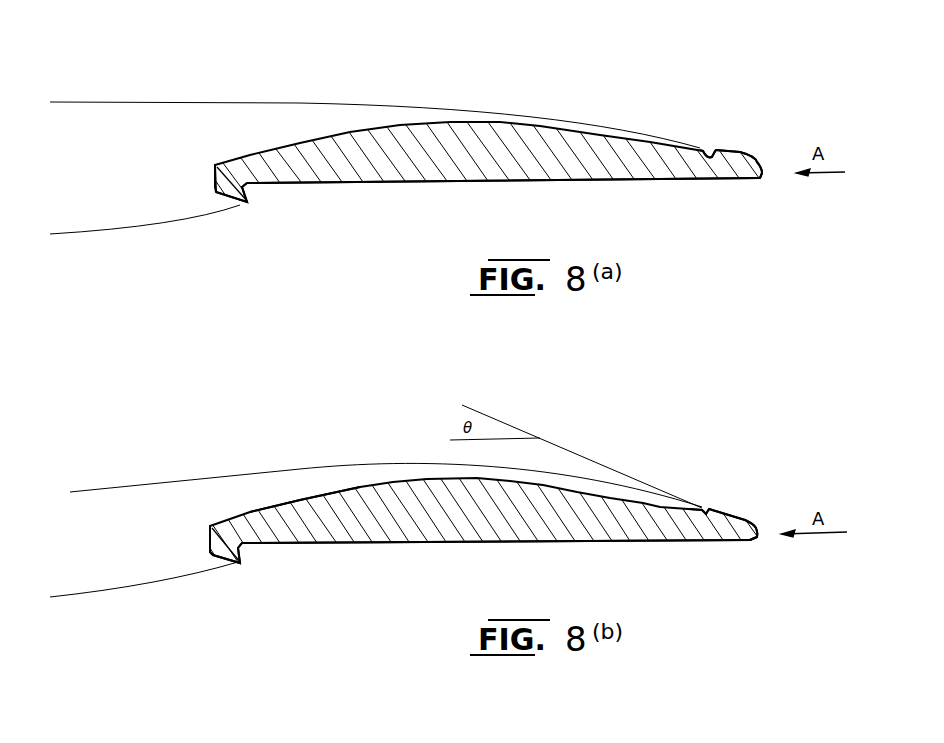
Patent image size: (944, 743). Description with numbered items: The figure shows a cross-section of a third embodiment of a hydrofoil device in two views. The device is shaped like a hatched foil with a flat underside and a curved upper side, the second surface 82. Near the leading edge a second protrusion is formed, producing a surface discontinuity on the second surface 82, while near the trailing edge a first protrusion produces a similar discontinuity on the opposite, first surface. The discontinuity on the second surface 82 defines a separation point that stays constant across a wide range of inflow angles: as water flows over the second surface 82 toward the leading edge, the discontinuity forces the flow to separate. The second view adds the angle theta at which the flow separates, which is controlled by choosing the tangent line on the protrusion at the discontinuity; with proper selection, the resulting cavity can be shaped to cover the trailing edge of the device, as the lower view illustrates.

The second surface 82 is at (322, 493).